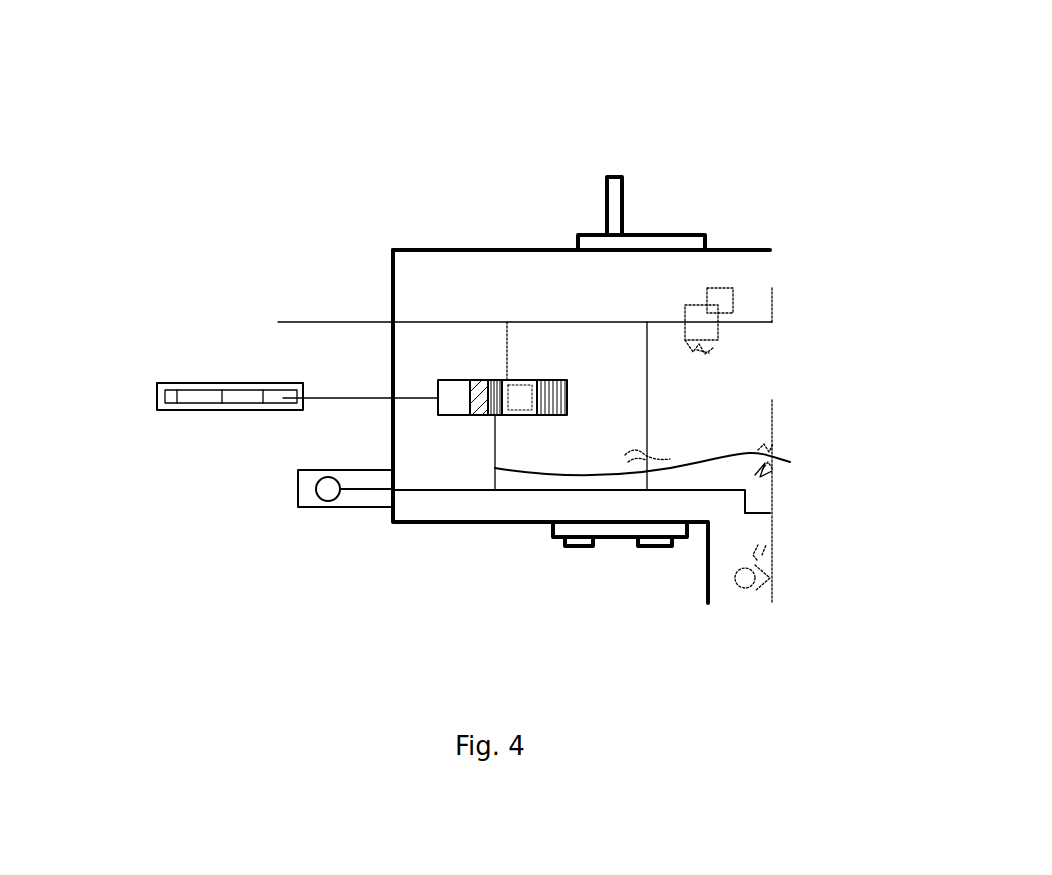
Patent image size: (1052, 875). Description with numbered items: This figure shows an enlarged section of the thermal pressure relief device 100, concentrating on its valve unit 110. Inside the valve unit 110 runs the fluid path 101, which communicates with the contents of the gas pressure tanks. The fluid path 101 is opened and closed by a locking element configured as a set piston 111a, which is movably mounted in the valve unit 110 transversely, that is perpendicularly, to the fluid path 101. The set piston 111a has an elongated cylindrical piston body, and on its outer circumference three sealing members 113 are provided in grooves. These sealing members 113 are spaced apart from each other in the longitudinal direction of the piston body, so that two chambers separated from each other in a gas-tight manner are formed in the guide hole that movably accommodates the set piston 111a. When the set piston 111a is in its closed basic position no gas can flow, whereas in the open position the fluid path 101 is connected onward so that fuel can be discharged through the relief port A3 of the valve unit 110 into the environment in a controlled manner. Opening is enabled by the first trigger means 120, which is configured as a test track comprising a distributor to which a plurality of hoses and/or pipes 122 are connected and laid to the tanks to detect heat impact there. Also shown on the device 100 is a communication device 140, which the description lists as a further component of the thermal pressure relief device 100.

The thermal pressure relief device 100 is at (210, 55).
The valve unit 110 is at (797, 226).
The set piston 111a is at (476, 390).
The sealing members 113 is at (490, 415).
The first trigger means 120 is at (235, 395).
The hoses and/or pipes 122 is at (260, 405).
The communication device 140 is at (636, 168).
The fluid path 101 is at (790, 462).
The relief port A3 is at (513, 321).